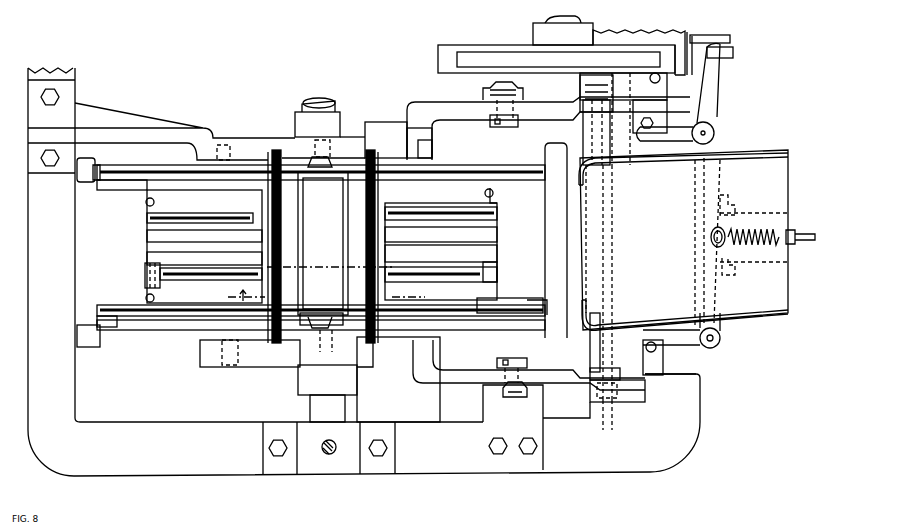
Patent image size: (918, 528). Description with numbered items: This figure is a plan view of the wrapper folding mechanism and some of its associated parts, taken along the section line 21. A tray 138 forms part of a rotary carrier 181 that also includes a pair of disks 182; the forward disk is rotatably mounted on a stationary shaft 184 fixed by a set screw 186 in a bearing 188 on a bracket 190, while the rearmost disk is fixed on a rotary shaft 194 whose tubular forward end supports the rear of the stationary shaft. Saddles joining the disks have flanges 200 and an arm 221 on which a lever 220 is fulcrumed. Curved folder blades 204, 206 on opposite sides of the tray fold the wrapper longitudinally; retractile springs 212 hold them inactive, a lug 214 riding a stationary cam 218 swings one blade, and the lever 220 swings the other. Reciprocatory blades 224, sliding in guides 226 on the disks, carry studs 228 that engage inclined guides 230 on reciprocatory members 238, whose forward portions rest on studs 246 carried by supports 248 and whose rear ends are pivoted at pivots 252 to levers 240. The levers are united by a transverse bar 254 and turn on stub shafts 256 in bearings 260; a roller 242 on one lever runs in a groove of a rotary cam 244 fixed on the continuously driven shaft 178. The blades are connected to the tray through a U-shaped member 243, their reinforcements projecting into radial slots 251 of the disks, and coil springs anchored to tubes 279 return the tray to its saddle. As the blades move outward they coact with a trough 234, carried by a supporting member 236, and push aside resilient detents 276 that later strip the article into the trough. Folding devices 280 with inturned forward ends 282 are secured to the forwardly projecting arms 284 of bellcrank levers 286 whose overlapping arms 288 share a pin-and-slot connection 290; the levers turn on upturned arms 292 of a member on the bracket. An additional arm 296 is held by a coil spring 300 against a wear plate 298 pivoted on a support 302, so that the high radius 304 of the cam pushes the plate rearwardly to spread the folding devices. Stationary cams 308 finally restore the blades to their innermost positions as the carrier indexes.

The section line 21 is at (322, 289).
The tray 138 is at (432, 240).
The shaft 178 is at (538, 23).
The rotary carrier 181 is at (172, 340).
The disks 182 is at (183, 173).
The stationary shaft 184 is at (310, 408).
The set screw 186 is at (328, 458).
The bearing 188 is at (352, 470).
The bracket 190 is at (455, 478).
The rotary shaft 194 is at (306, 118).
The flanges 200 is at (485, 193).
The curved folder blade 204 is at (270, 150).
The curved folder blade 206 is at (415, 143).
The retractile springs 212 is at (145, 203).
The lug 214 is at (155, 238).
The stationary cam 218 is at (185, 238).
The lever 220 is at (160, 258).
The arm 221 is at (142, 283).
The reciprocatory blades 224 is at (100, 173).
The guides 226 is at (350, 155).
The studs 228 is at (298, 368).
The inclined guides 230 is at (376, 122).
The trough 234 is at (773, 160).
The supporting member 236 is at (729, 214).
The reciprocatory members 238 is at (457, 112).
The levers 240 is at (627, 397).
The antifriction roller 242 is at (620, 57).
The U-shaped member 243 is at (487, 313).
The rotary cam 244 is at (440, 60).
The studs 246 is at (492, 121).
The supports 248 is at (485, 90).
The radial slots 251 is at (321, 319).
The pivots 252 is at (583, 114).
The transverse bar 254 is at (600, 356).
The stub shafts 256 is at (647, 392).
The bearings 260 is at (657, 367).
The resilient detents 276 is at (596, 173).
The tubes 279 is at (185, 278).
The folding devices 280 is at (625, 325).
The inturned forward ends 282 is at (586, 305).
The forwardly projecting arms 284 is at (666, 357).
The bellcrank levers 286 is at (722, 338).
The overlapping arms 288 is at (715, 175).
The pin-and-slot connection 290 is at (710, 237).
The upturned arms 292 is at (722, 346).
The additional arm 296 is at (715, 94).
The wear plate 298 is at (734, 52).
The coil spring 300 is at (762, 256).
The support 302 is at (730, 39).
The high radius 304 is at (668, 53).
The stationary cams 308 is at (246, 146).